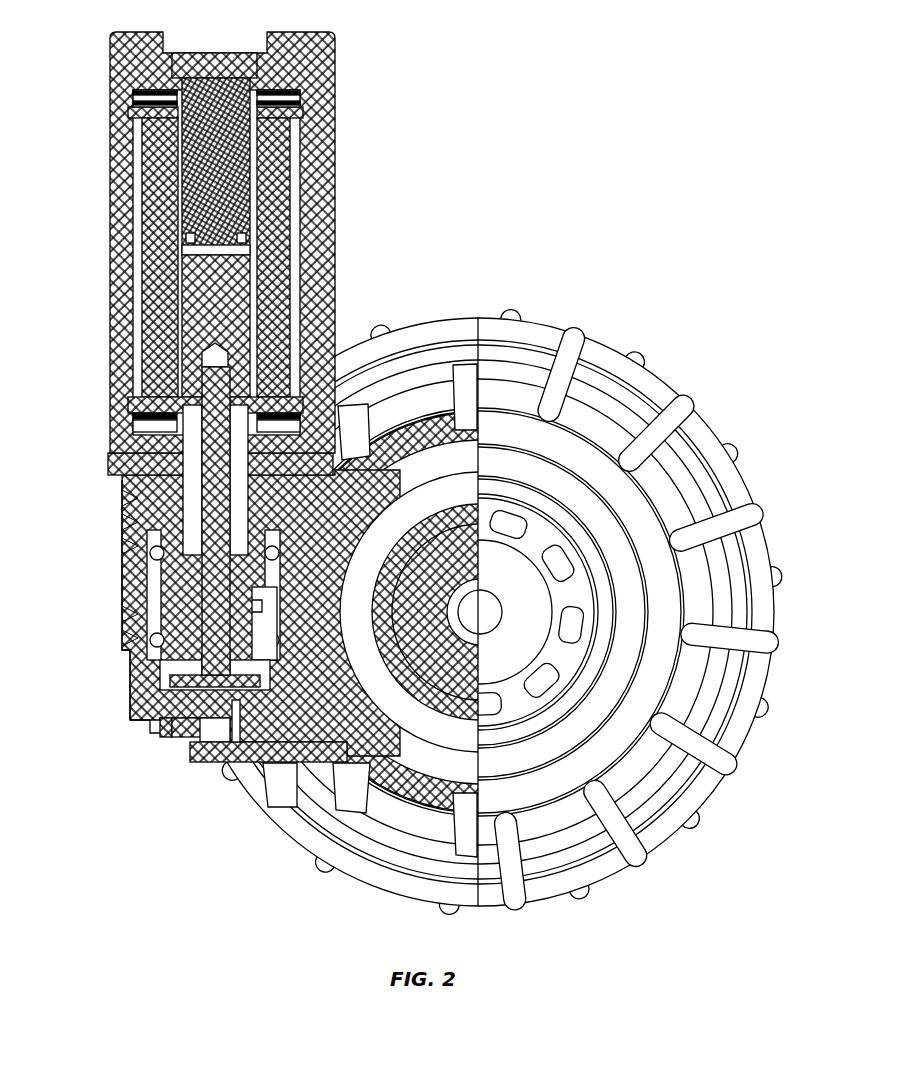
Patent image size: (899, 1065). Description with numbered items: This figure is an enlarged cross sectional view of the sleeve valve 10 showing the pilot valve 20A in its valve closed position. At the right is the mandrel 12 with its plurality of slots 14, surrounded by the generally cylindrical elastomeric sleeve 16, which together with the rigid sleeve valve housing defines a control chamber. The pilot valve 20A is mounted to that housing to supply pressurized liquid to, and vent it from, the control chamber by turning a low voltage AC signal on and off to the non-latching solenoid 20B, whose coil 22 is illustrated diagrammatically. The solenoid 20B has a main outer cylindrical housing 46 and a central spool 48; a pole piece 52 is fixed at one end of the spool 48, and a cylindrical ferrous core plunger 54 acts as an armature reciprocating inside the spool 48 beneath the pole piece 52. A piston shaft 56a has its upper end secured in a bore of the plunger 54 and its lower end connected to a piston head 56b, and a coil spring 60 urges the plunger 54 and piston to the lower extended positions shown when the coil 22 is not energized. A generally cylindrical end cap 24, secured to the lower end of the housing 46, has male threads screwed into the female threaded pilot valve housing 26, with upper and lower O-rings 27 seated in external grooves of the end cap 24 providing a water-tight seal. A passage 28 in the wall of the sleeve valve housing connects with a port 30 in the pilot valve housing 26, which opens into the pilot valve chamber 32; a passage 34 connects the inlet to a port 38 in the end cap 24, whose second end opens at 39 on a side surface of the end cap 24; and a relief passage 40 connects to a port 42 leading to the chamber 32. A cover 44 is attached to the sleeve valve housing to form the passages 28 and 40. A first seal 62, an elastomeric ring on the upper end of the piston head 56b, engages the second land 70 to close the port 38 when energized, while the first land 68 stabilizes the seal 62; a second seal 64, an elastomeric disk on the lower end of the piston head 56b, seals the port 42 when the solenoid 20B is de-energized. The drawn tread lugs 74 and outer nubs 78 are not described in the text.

The sleeve valve 10 is at (492, 600).
The mandrel 12 is at (545, 525).
The slots 14 is at (563, 563).
The elastomeric sleeve 16 is at (600, 618).
The pilot valve 20A is at (102, 593).
The non-latching solenoid 20B is at (360, 192).
The coil 22 is at (270, 175).
The end cap 24 is at (119, 600).
The pilot valve housing 26 is at (116, 618).
The O-rings 27 is at (160, 530).
The passage 28 is at (330, 705).
The port 30 is at (215, 725).
The pilot valve chamber 32 is at (132, 705).
The passage 34 is at (262, 595).
The port 38 is at (258, 620).
The second end opening of port 39 is at (295, 590).
The relief passage 40 is at (185, 740).
The port 42 is at (170, 735).
The cover 44 is at (240, 770).
The housing 46 is at (249, 242).
The spool 48 is at (275, 300).
The pole piece 52 is at (250, 85).
The plunger 54 is at (320, 265).
The piston shaft 56a is at (205, 385).
The piston head 56b is at (238, 765).
The coil spring 60 is at (130, 462).
The first seal 62 is at (371, 613).
The second seal 64 is at (205, 680).
The first land 68 is at (165, 680).
The second land 70 is at (285, 668).
The lug 74 is at (620, 680).
The nub 78 is at (700, 795).